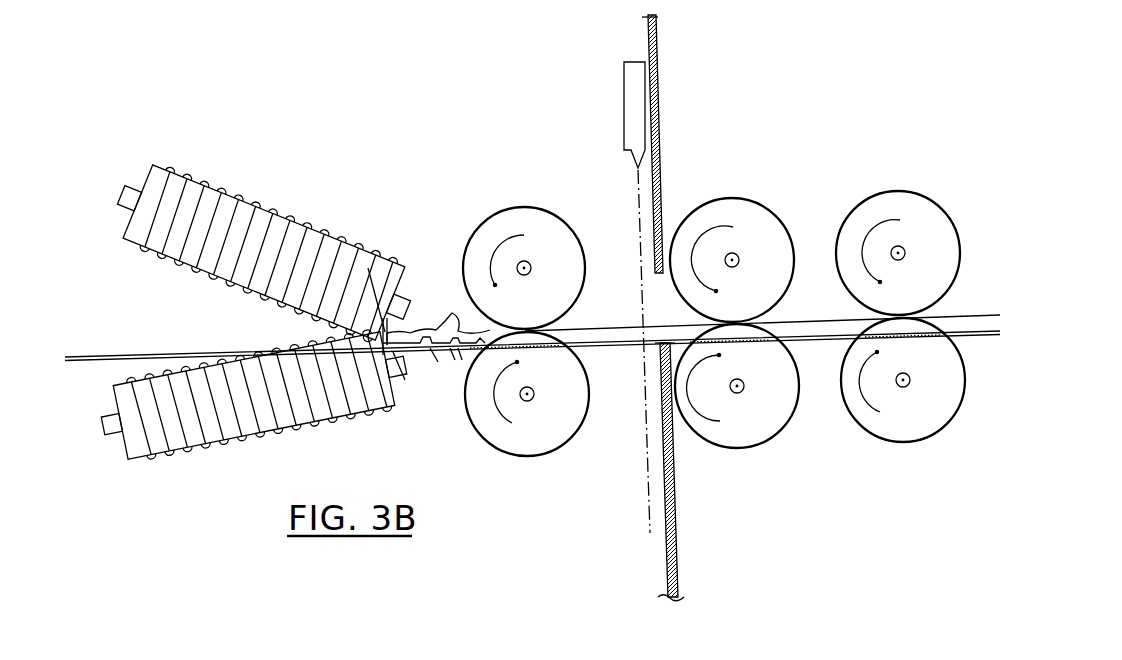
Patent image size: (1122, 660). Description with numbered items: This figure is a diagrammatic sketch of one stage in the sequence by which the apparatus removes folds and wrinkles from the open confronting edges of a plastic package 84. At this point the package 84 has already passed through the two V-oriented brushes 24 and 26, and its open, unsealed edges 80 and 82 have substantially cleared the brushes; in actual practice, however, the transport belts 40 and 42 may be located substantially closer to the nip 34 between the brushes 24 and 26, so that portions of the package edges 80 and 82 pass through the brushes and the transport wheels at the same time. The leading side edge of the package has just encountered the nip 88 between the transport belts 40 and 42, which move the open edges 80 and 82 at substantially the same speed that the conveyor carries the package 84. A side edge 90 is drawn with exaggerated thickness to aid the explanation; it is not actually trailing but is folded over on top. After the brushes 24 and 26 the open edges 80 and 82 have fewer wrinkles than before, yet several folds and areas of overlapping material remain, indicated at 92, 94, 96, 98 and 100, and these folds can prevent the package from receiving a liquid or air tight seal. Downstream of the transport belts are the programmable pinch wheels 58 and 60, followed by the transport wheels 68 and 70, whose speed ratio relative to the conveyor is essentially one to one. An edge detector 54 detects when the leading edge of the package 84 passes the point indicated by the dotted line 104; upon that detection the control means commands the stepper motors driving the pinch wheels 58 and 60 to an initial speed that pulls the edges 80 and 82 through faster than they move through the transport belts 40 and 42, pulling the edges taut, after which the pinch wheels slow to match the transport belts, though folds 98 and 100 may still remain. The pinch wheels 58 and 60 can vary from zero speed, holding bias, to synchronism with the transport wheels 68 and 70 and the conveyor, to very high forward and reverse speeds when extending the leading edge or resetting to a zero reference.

The V oriented brush 24 is at (202, 199).
The V oriented brush 26 is at (187, 442).
The nip between brushes 34 is at (357, 332).
The transport belt 40 is at (517, 212).
The transport belt 42 is at (570, 420).
The edge detector 54 is at (633, 93).
The pinch wheel 58 is at (755, 222).
The pinch wheel 60 is at (760, 433).
The transport wheel 68 is at (893, 202).
The transport wheel 70 is at (917, 428).
The unsealed edge 80 is at (476, 114).
The unsealed edge 82 is at (455, 350).
The plastic package 84 is at (417, 246).
The nip between transport belts 88 is at (555, 327).
The side edge 90 is at (388, 328).
The fold 92 is at (395, 402).
The fold 94 is at (440, 350).
The fold 96 is at (460, 350).
The fold 98 is at (447, 313).
The fold 100 is at (383, 330).
The dotted line 104 is at (660, 522).